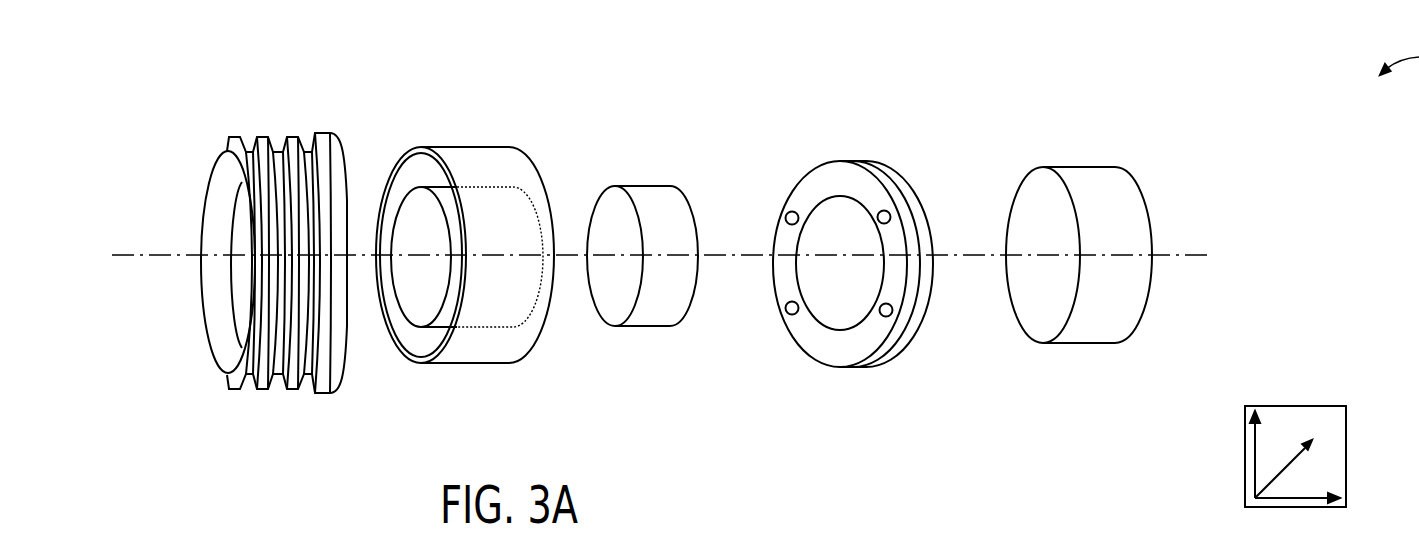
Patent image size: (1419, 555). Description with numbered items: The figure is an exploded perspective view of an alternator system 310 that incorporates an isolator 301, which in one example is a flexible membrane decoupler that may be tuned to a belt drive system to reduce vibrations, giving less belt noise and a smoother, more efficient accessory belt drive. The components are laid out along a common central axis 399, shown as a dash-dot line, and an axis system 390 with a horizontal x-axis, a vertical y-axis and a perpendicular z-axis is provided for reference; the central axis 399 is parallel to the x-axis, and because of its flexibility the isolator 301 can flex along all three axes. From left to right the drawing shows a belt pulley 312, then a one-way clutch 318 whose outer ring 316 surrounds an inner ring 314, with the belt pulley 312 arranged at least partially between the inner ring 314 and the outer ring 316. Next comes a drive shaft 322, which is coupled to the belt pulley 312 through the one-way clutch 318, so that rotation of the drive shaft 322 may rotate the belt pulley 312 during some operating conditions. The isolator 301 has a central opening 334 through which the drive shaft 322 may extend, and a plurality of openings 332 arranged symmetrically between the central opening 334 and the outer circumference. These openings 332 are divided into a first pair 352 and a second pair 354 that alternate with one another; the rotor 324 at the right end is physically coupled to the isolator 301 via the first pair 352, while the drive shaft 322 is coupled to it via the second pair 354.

The alternator system 310 is at (1181, 95).
The belt pulley 312 is at (228, 138).
The inner ring 314 is at (483, 327).
The outer ring 316 is at (510, 147).
The one-way clutch 318 is at (475, 262).
The drive shaft 322 is at (651, 186).
The rotor 324 is at (1100, 166).
The isolator 301 is at (853, 240).
The plurality of openings 332 is at (776, 203).
The central opening 334 is at (853, 287).
The first pair 352 is at (887, 211).
The second pair 354 is at (795, 211).
The axis system 390 is at (1347, 427).
The central axis 399 is at (1207, 253).